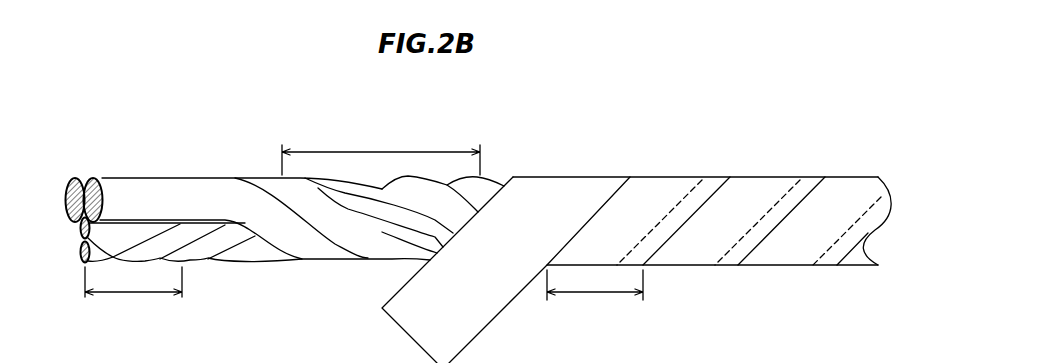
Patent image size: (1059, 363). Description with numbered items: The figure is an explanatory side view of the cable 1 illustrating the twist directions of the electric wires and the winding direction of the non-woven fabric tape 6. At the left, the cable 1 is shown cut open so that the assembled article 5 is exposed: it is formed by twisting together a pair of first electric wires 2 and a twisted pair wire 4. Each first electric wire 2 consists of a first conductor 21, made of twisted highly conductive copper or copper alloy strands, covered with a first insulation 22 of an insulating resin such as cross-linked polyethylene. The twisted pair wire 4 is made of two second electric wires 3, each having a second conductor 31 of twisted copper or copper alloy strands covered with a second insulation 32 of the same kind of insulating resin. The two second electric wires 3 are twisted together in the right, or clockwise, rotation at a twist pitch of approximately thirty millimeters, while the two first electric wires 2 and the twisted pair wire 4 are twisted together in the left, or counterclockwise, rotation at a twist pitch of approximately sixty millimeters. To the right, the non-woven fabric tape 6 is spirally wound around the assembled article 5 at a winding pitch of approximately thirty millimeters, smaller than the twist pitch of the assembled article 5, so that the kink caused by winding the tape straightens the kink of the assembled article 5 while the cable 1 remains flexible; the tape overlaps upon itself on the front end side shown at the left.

The cable 1 is at (816, 133).
The first electric wire 2 is at (112, 180).
The first conductor 21 is at (73, 180).
The first insulation 22 is at (80, 179).
The second electric wire 3 is at (190, 253).
The second conductor 31 is at (82, 259).
The second insulation 32 is at (82, 246).
The twisted pair wire 4 is at (258, 253).
The assembled article 5 is at (239, 165).
The non-woven fabric tape 6 is at (787, 259).